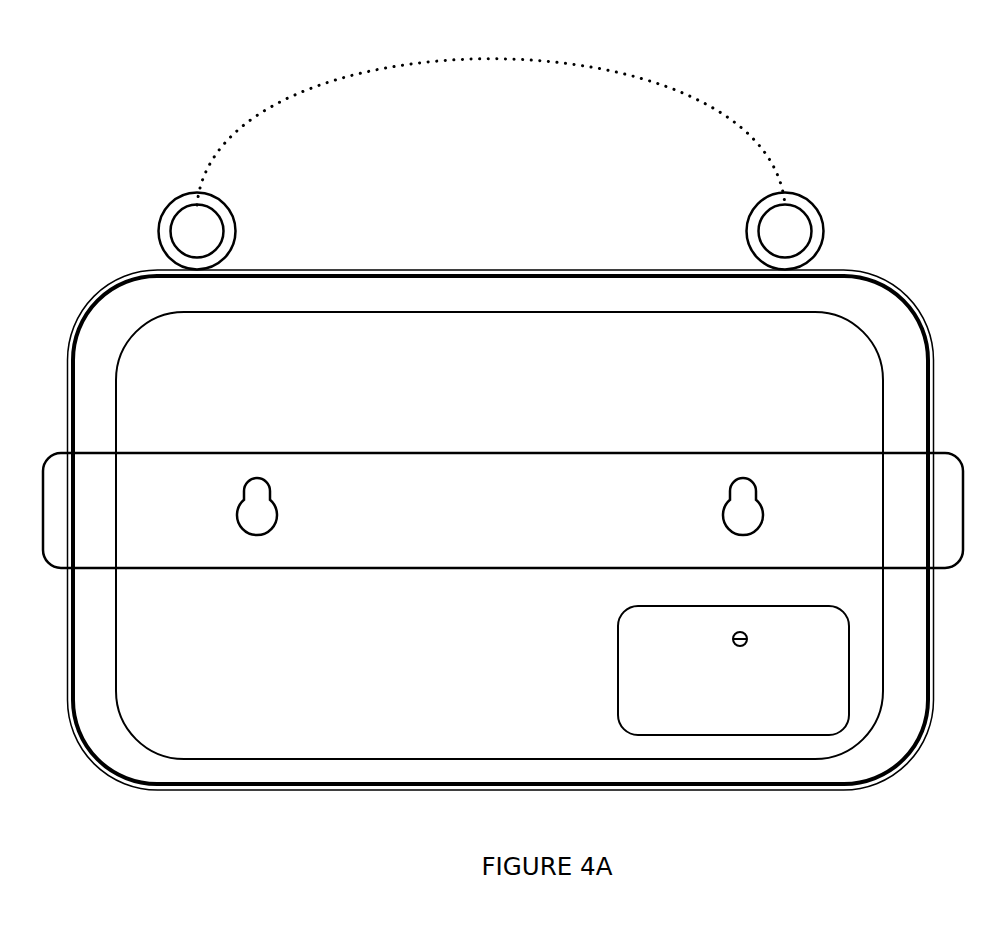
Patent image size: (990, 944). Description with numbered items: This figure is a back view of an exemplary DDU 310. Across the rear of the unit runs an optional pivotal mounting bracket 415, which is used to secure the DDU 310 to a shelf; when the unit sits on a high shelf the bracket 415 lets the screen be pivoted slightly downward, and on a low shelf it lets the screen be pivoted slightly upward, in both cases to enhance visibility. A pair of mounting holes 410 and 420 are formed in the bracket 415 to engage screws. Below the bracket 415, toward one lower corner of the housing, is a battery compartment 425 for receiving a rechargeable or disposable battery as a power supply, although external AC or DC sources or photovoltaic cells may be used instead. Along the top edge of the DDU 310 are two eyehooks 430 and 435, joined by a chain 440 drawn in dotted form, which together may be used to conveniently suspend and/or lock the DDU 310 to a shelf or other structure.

The DDU 310 is at (490, 271).
The mounting hole 410 is at (258, 478).
The pivotal mounting bracket 415 is at (467, 453).
The mounting hole 420 is at (745, 478).
The battery compartment 425 is at (720, 735).
The eyehook 430 is at (222, 248).
The eyehook 435 is at (758, 248).
The chain 440 is at (491, 132).